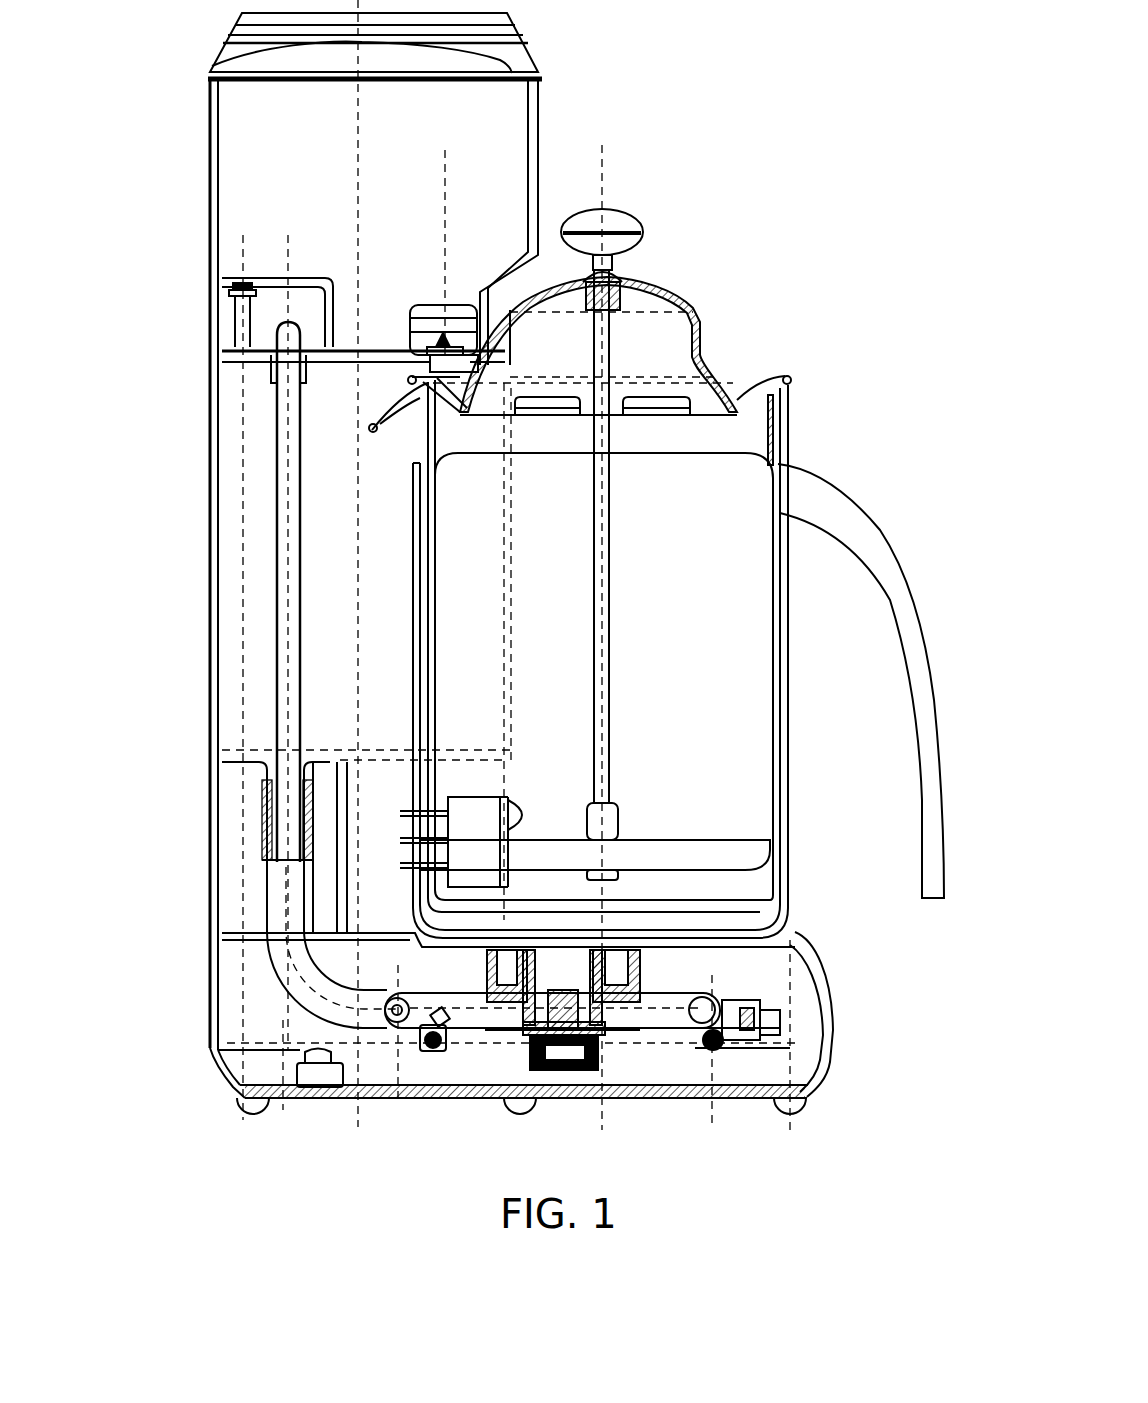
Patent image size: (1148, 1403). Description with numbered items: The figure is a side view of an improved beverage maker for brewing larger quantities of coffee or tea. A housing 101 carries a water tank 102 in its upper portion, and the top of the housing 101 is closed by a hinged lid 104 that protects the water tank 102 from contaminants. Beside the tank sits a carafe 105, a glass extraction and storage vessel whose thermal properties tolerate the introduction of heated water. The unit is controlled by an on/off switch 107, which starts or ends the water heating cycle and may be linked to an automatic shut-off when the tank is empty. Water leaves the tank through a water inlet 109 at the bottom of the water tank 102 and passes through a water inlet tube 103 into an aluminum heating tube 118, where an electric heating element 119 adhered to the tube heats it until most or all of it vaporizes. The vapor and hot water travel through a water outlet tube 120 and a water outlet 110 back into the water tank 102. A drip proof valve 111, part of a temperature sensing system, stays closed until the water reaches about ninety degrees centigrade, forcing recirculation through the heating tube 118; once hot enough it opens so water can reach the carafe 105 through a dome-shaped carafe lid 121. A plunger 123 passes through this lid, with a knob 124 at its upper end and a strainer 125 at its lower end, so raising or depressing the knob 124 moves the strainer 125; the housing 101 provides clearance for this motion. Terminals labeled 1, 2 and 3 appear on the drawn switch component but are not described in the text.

The housing 101 is at (210, 665).
The water tank 102 is at (283, 120).
The water inlet tube 103 is at (222, 322).
The hinged lid 104 is at (535, 44).
The carafe 105 is at (725, 567).
The on/off switch 107 is at (325, 855).
The water inlet 109 is at (247, 276).
The water outlet 110 is at (291, 322).
The drip proof valve 111 is at (419, 302).
The heating tube 118 is at (650, 1008).
The electric heating element 119 is at (500, 1022).
The water outlet tube 120 is at (290, 712).
The carafe lid 121 is at (662, 362).
The plunger 123 is at (612, 665).
The knob 124 is at (643, 216).
The strainer 125 is at (685, 836).
The terminal 1 is at (404, 866).
The terminal 2 is at (404, 841).
The terminal 3 is at (404, 814).